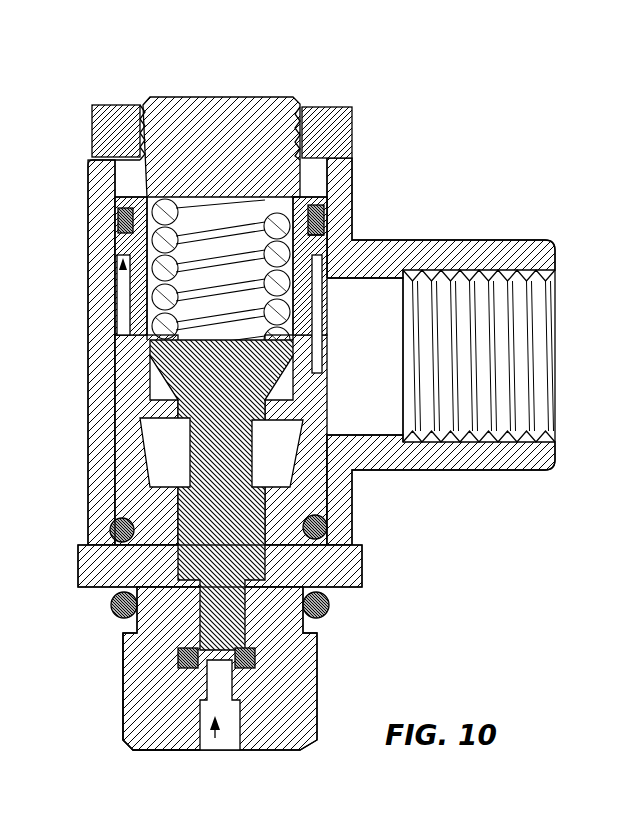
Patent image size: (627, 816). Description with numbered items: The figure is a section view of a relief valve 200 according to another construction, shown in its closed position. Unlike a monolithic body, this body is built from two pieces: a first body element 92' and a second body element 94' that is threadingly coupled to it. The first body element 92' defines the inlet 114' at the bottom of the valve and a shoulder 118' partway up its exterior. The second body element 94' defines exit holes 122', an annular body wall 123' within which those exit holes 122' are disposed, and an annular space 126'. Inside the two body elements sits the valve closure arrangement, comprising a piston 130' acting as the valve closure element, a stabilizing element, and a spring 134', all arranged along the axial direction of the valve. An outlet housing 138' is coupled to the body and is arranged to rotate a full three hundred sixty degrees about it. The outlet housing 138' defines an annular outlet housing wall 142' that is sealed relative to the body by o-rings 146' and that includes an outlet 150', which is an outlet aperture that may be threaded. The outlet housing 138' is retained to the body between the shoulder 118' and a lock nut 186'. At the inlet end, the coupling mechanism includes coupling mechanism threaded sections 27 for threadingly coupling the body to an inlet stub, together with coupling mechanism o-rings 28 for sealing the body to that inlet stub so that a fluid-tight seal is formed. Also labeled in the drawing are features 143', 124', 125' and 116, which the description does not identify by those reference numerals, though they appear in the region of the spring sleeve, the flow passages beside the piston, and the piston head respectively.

The relief valve 200 is at (520, 135).
The second body element 94' is at (215, 125).
The lock nut 186' is at (186, 125).
The annular outlet housing wall 142' is at (283, 351).
The flow passage 143' is at (71, 295).
The annular space 126' is at (72, 267).
The exit holes 122' is at (157, 419).
The spring sleeve 124' is at (262, 240).
The annular body wall 123' is at (376, 209).
The seal groove 125' is at (401, 233).
The outlet housing 138' is at (479, 324).
The spring 134' is at (350, 314).
The poppet 116 is at (265, 430).
The outlet 150' is at (470, 356).
The o-rings 146' is at (169, 507).
The piston 130' is at (441, 490).
The shoulder 118' is at (266, 570).
The coupling mechanism o-rings 28 is at (113, 606).
The coupling mechanism threaded sections 27 is at (123, 690).
The first body element 92' is at (261, 668).
The inlet 114' is at (191, 723).